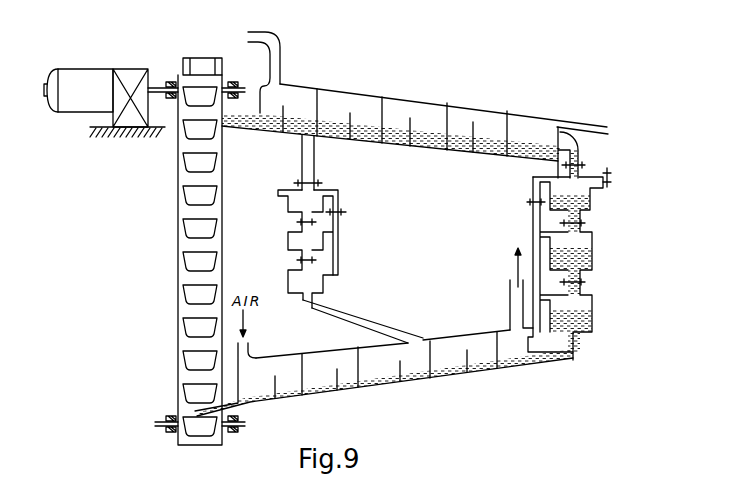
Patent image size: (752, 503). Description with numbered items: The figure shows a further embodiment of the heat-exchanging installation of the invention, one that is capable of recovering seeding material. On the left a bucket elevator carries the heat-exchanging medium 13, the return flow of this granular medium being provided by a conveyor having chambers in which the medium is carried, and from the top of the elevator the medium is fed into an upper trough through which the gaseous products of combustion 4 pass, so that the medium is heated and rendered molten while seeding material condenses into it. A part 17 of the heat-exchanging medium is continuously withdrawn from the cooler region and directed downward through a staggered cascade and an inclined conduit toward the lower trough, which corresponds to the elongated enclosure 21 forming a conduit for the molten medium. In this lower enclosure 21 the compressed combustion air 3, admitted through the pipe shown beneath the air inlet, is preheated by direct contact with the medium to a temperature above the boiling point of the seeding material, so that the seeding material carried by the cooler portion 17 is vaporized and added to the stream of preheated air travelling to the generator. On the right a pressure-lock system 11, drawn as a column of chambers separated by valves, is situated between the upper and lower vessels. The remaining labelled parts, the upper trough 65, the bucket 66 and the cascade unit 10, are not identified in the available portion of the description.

The heat-exchanging medium 13 is at (178, 220).
The bucket 66 is at (196, 262).
The upper trough 65 is at (427, 170).
The gaseous products of combustion 4 is at (597, 133).
The cascade unit 10 is at (368, 246).
The part of the heat-exchanging medium 17 is at (382, 326).
The elongated enclosure 21 is at (392, 409).
The compressed combustion air 3 is at (514, 282).
The pressure-lock system 11 is at (622, 258).